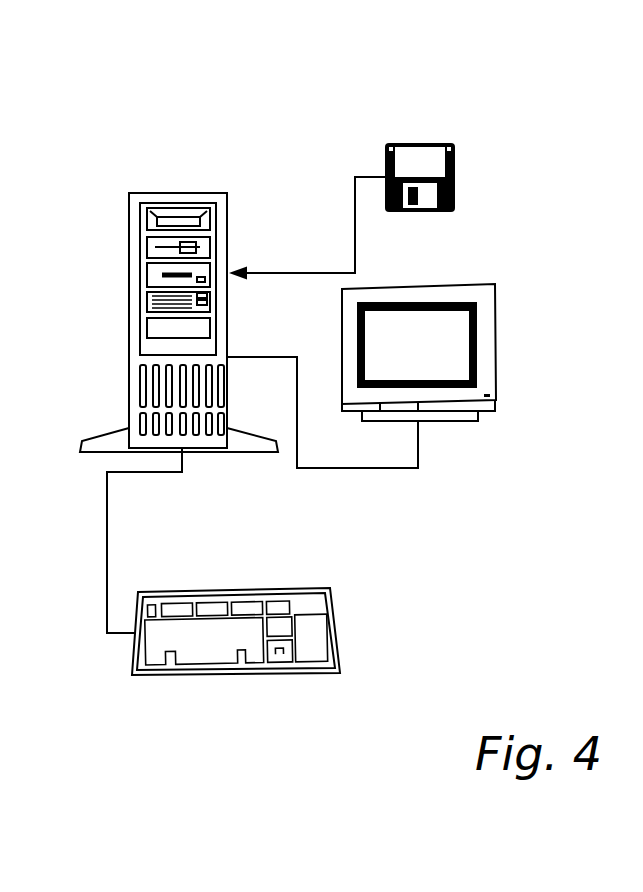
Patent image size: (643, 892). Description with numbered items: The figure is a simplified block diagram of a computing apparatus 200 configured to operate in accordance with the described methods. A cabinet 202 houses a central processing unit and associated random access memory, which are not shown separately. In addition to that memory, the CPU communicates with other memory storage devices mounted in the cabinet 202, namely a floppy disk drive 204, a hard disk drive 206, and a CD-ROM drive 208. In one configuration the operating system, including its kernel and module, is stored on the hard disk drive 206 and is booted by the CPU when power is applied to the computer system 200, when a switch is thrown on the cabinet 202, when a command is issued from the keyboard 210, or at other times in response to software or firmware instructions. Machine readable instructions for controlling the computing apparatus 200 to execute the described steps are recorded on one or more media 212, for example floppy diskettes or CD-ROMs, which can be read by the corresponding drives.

The computing apparatus 200 is at (280, 107).
The cabinet 202 is at (186, 193).
The floppy disk drive 204 is at (215, 270).
The hard disk drive 206 is at (216, 301).
The CD-ROM drive 208 is at (216, 322).
The keyboard 210 is at (336, 622).
The media 212 is at (457, 172).